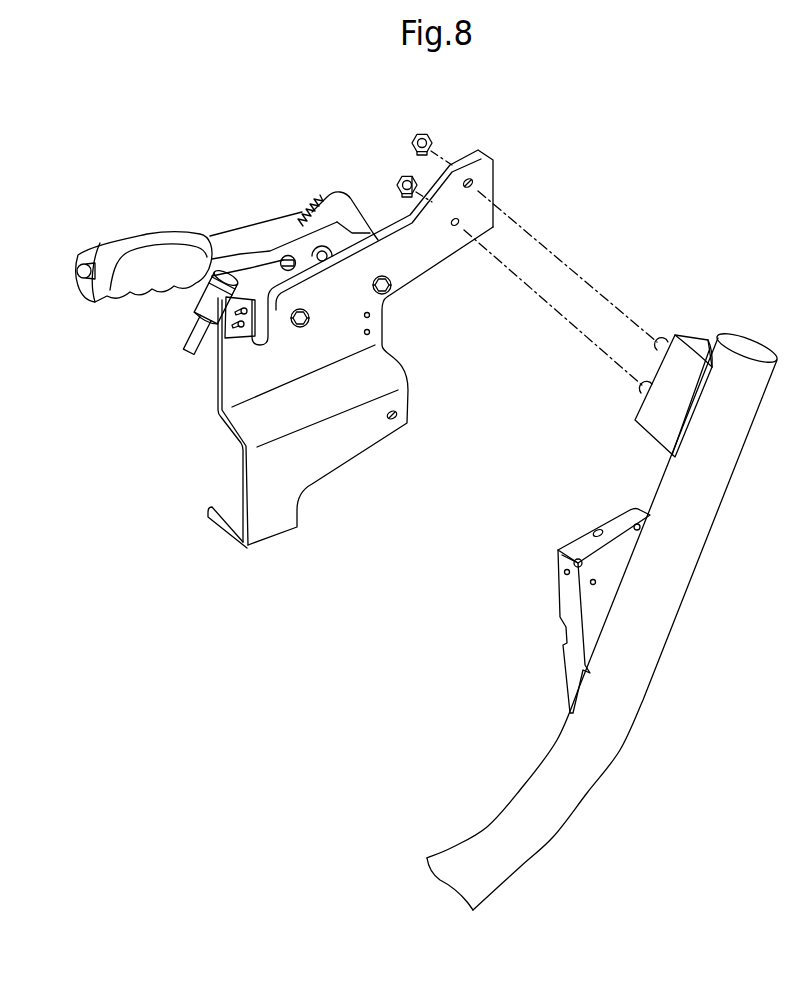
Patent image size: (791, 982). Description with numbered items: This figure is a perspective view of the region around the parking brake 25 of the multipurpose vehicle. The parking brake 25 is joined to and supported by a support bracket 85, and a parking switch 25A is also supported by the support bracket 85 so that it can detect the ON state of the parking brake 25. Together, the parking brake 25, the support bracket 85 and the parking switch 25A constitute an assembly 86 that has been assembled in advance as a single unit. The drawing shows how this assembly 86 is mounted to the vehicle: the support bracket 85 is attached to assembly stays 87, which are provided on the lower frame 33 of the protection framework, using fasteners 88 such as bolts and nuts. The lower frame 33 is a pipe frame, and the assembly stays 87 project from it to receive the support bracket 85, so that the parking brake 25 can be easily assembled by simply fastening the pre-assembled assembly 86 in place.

The assembly 86 is at (140, 152).
The parking brake 25 is at (181, 238).
The parking switch 25A is at (203, 308).
The support bracket 85 is at (375, 378).
The fasteners 88 is at (400, 176).
The assembly stays 87 is at (617, 520).
The lower frame 33 is at (600, 777).